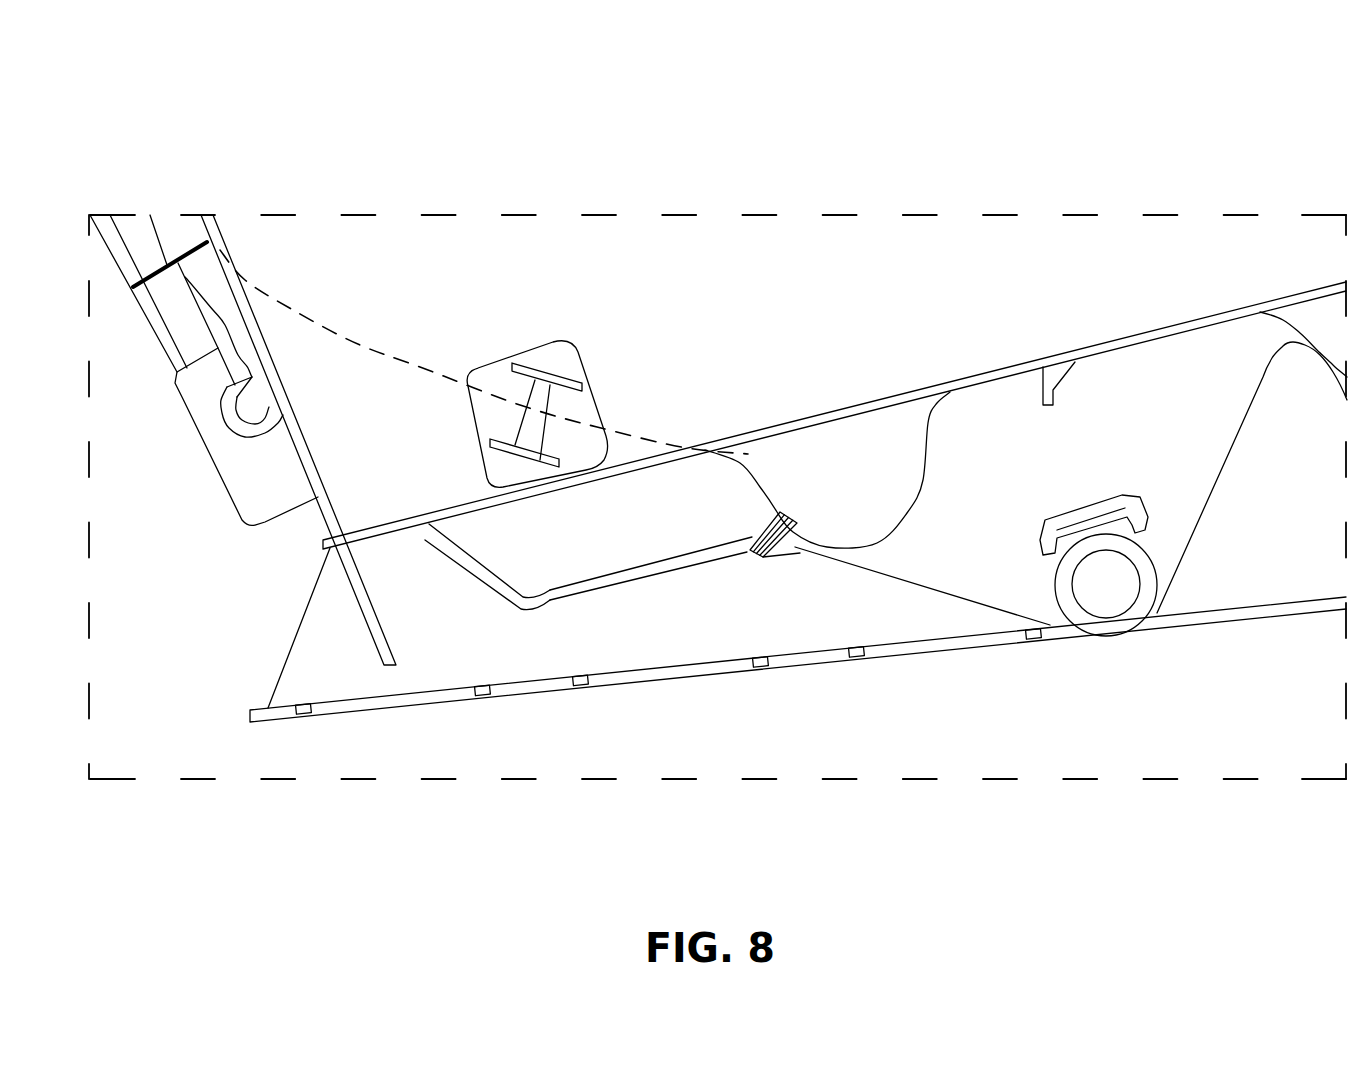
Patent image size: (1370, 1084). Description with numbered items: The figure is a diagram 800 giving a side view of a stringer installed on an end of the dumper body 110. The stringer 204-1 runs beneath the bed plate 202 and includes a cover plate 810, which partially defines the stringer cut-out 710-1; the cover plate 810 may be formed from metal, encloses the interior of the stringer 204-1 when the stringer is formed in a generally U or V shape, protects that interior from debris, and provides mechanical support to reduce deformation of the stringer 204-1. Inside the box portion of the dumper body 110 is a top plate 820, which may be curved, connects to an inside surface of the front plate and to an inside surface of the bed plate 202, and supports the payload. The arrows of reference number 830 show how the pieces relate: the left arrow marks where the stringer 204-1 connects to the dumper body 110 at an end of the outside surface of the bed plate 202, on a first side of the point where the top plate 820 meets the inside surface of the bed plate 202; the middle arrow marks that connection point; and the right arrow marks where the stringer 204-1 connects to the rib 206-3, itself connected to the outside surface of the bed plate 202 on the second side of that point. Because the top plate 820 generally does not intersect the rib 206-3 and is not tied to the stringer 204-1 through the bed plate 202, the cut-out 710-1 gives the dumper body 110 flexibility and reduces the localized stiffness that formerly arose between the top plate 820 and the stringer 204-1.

The diagram 800 is at (195, 62).
The dumper body 110 is at (717, 475).
The bed plate 202 is at (970, 378).
The stringer 204-1 is at (725, 648).
The rib 206-3 is at (880, 468).
The stringer cut-out 710-1 is at (690, 530).
The cover plate 810 is at (518, 585).
The top plate 820 is at (423, 362).
The stringer connection points 830 is at (785, 491).